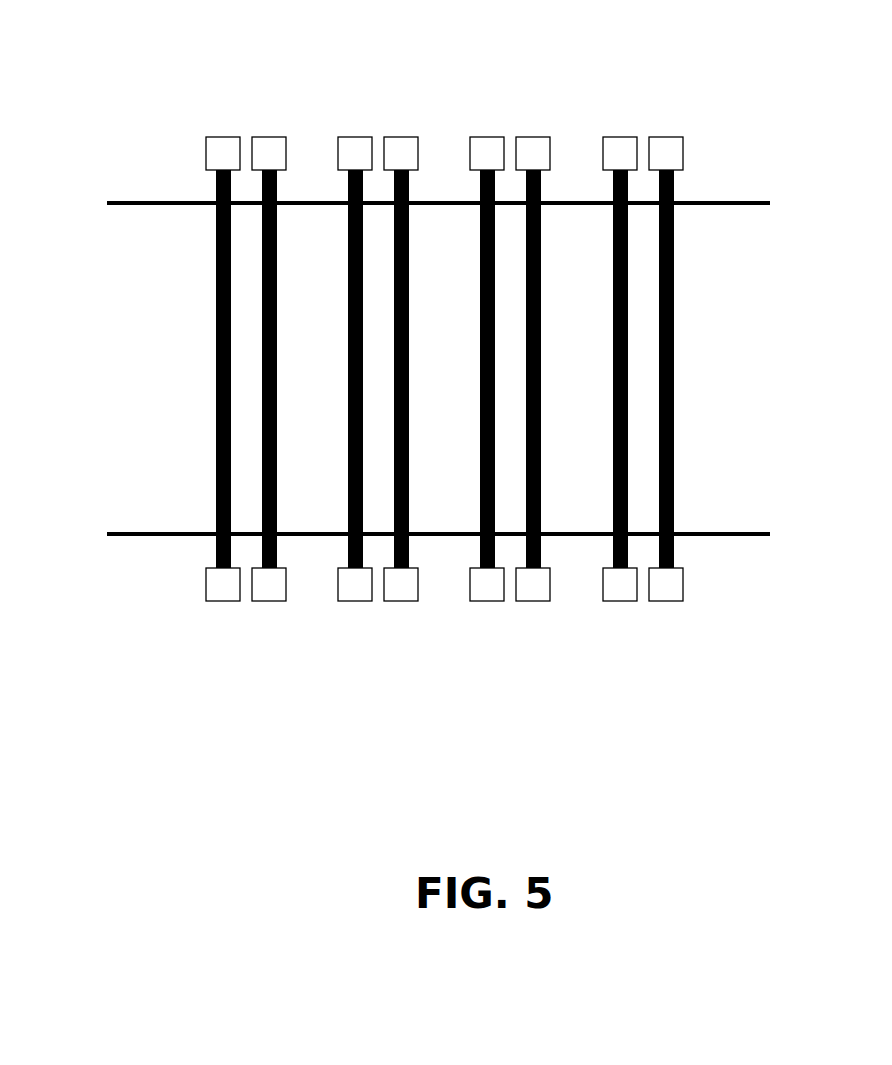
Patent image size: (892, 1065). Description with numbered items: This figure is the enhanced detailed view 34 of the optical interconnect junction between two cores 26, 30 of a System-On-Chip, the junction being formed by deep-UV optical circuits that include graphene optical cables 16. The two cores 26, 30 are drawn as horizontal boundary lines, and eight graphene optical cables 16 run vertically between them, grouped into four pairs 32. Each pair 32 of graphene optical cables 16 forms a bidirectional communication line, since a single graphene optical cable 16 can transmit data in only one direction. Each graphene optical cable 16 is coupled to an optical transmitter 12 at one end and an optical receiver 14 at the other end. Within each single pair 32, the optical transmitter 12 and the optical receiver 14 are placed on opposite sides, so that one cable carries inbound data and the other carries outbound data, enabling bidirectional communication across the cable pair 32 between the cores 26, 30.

The optical transmitter 12 is at (224, 136).
The optical receiver 14 is at (268, 136).
The graphene optical cable 16 is at (215, 476).
The core 26 is at (717, 181).
The core 30 is at (717, 571).
The pair of graphene optical cables 32 is at (205, 350).
The enhanced detailed view 34 is at (112, 58).